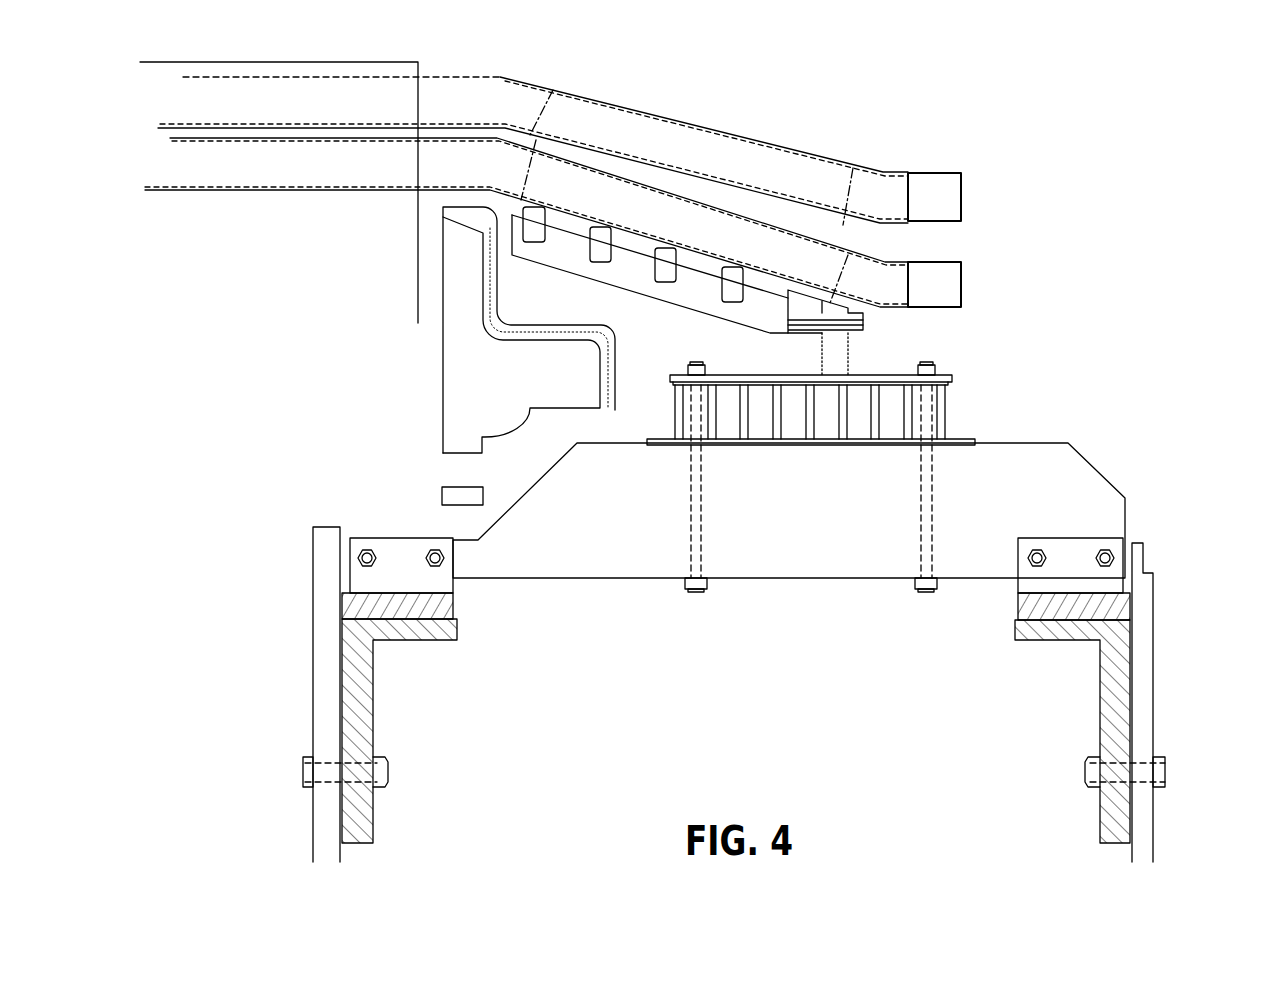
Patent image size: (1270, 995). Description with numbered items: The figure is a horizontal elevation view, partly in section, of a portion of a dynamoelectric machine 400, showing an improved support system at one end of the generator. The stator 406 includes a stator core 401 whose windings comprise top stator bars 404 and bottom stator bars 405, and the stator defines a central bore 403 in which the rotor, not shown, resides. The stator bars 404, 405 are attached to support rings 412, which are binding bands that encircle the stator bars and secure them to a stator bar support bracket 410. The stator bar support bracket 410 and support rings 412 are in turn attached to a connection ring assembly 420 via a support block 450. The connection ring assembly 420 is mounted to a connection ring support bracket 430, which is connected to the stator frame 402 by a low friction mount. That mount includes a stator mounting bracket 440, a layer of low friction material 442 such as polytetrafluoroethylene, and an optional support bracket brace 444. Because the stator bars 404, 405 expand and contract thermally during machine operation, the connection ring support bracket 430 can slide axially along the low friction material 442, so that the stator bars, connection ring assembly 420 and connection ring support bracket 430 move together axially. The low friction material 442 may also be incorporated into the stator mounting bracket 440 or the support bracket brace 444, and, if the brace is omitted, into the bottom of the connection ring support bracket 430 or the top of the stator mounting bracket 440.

The dynamoelectric machine 400 is at (1008, 128).
The stator core 401 is at (265, 336).
The stator frame 402 is at (313, 615).
The central bore 403 is at (352, 62).
The top stator bars 404 is at (312, 117).
The bottom stator bars 405 is at (307, 180).
The stator 406 is at (225, 492).
The stator bar support bracket 410 is at (628, 293).
The support rings 412 is at (724, 295).
The connection ring assembly 420 is at (970, 397).
The connection ring support bracket 430 is at (826, 520).
The stator mounting bracket 440 is at (373, 703).
The low friction material 442 is at (453, 600).
The support bracket brace 444 is at (392, 538).
The support block 450 is at (840, 348).